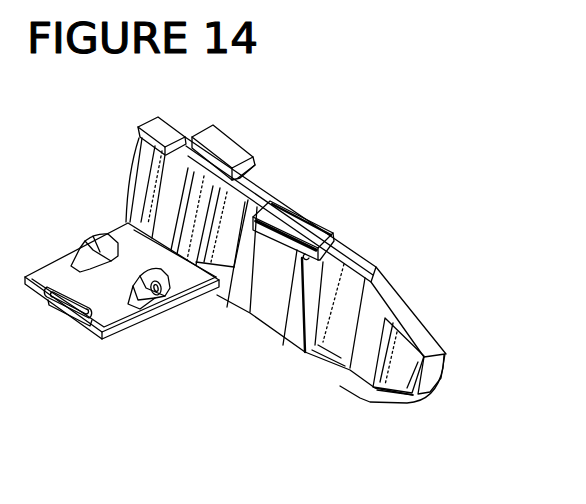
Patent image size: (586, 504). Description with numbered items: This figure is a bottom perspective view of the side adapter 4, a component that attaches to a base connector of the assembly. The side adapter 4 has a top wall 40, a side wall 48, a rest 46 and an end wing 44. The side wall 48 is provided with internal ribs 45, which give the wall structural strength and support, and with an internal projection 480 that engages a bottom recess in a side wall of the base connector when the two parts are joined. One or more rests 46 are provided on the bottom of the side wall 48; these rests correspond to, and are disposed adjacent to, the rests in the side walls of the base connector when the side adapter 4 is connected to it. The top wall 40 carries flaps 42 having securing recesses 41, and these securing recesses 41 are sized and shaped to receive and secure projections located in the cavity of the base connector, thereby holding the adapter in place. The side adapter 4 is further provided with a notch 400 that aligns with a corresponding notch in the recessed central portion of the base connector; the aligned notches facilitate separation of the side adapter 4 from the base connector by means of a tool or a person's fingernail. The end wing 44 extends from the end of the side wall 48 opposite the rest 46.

The side adapter 4 is at (100, 165).
The top wall 40 is at (77, 272).
The notch 400 is at (70, 308).
The securing recesses 41 is at (163, 304).
The flaps 42 is at (101, 251).
The end wing 44 is at (430, 373).
The internal ribs 45 is at (245, 270).
The rest 46 is at (237, 150).
The side wall 48 is at (353, 250).
The internal projection 480 is at (288, 235).